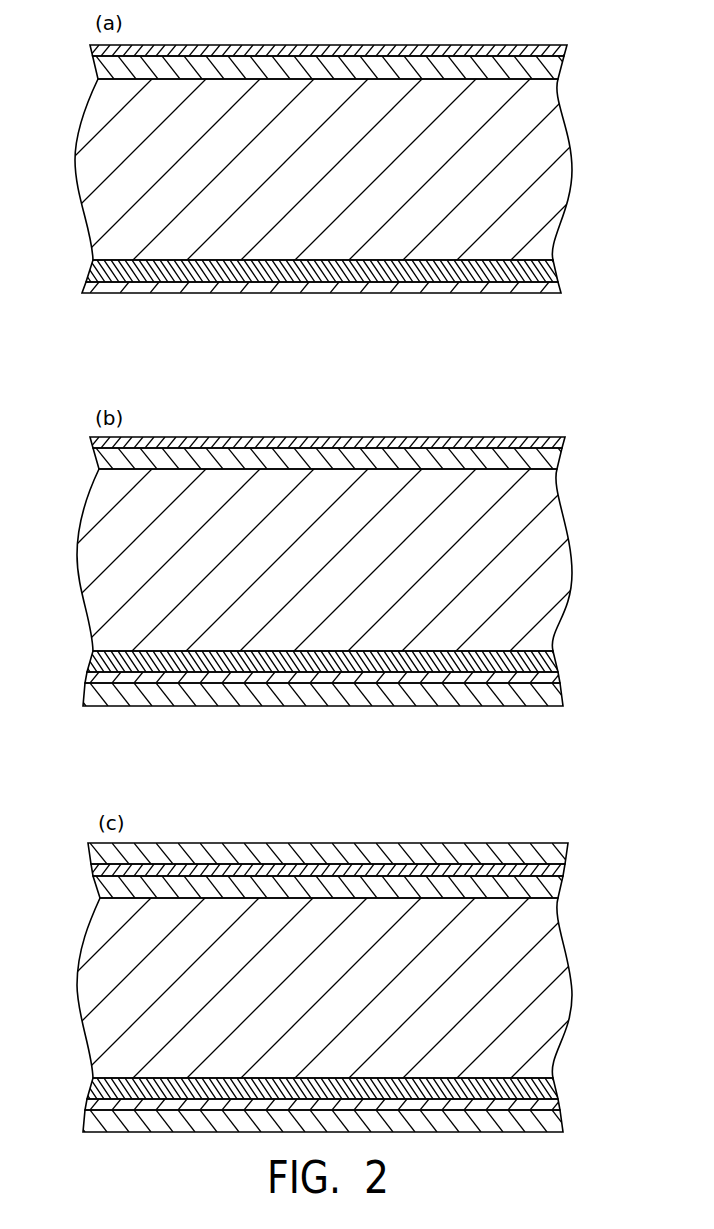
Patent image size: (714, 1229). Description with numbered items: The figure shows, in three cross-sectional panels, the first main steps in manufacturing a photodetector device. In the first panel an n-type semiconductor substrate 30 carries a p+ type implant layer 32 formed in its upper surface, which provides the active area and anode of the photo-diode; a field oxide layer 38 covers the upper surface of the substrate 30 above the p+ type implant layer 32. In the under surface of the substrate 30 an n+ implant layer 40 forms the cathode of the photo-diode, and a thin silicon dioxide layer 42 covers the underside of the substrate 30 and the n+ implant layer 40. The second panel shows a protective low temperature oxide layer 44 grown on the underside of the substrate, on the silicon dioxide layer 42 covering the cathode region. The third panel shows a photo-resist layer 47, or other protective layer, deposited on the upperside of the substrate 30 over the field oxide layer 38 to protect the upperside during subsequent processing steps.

The n-type semiconductor substrate 30 is at (556, 167).
The p+ type implant layer 32 is at (560, 62).
The field oxide layer 38 is at (90, 50).
The n+ implant layer 40 is at (553, 269).
The thin silicon dioxide layer 42 is at (86, 287).
The protective low temperature oxide layer 44 is at (560, 689).
The photo-resist layer 47 is at (563, 848).